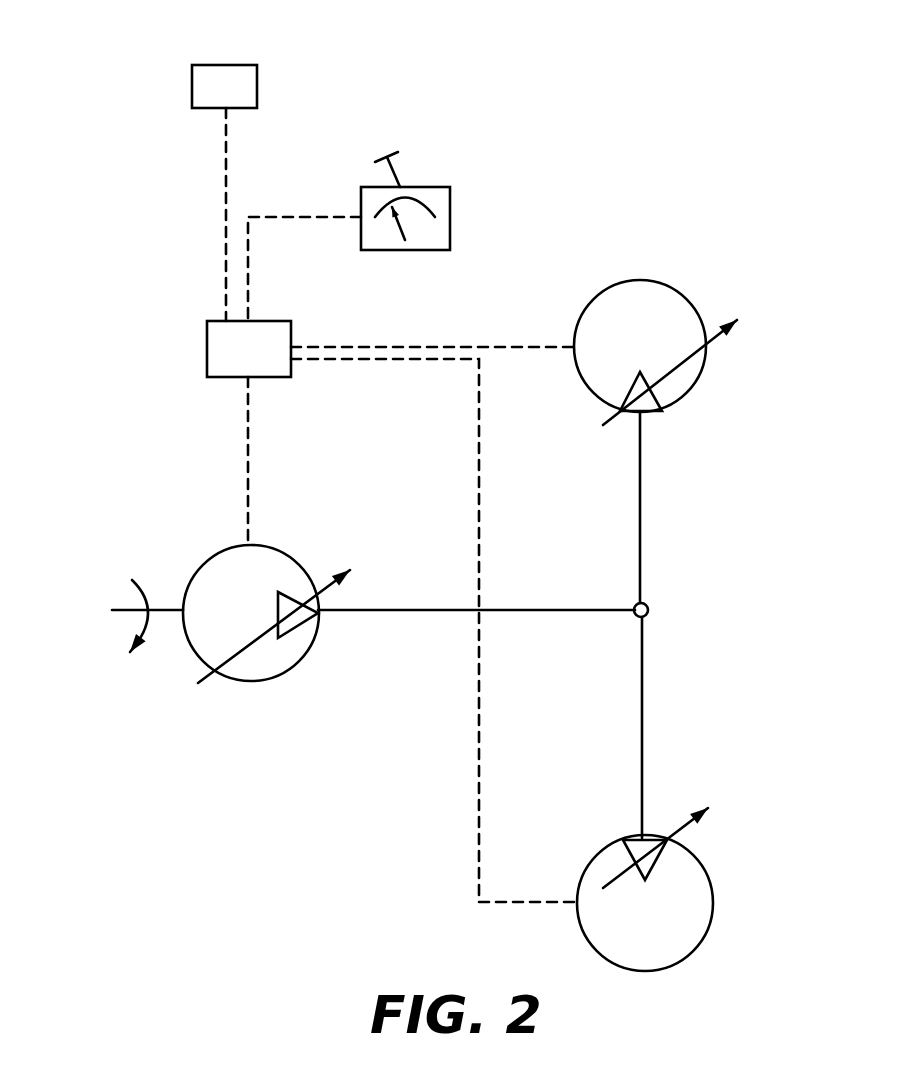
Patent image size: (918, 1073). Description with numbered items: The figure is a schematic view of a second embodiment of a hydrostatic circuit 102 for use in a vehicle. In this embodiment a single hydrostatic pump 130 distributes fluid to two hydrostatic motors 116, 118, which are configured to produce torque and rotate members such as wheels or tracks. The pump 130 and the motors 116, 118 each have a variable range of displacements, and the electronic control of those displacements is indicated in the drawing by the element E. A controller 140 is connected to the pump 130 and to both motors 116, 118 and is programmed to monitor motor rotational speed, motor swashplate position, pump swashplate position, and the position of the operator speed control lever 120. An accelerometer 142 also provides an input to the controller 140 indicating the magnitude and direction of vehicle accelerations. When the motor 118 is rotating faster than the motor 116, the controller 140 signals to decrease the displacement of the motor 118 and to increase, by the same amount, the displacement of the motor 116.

The hydrostatic circuit 102 is at (748, 128).
The hydrostatic motor 116 is at (668, 283).
The hydrostatic motor 118 is at (713, 900).
The operator speed control lever 120 is at (450, 210).
The hydrostatic pump 130 is at (200, 657).
The controller 140 is at (207, 345).
The accelerometer 142 is at (222, 65).